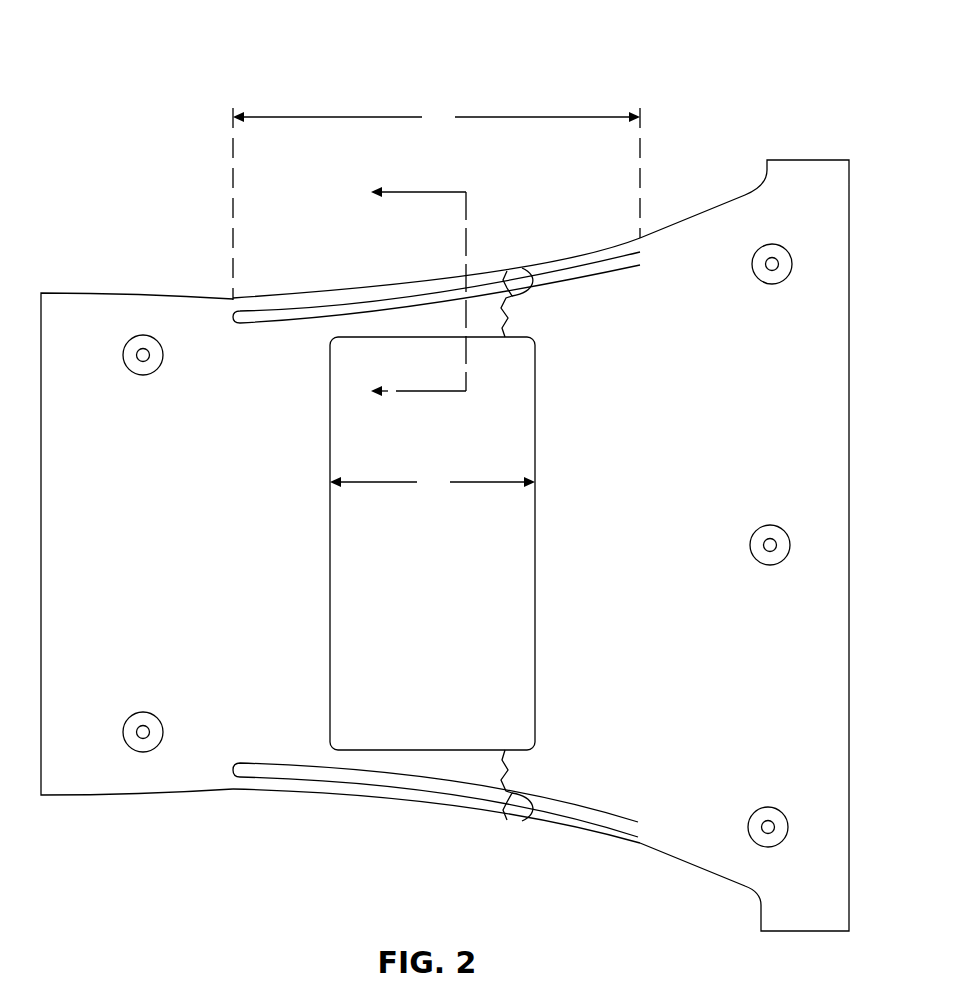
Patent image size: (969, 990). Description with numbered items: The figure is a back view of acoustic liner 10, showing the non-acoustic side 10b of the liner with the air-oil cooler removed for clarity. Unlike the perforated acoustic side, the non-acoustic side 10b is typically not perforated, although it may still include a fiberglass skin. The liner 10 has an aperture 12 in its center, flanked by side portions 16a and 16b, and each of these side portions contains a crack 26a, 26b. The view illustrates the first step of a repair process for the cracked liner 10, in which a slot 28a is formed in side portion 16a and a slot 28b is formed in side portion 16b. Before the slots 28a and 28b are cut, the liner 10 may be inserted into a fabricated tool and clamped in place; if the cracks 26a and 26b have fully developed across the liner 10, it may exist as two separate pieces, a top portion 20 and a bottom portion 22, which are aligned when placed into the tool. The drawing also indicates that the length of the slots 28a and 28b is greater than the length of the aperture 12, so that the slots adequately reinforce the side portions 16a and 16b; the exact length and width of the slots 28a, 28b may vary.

The acoustic liner 10 is at (193, 73).
The non-acoustic side 10b is at (137, 523).
The aperture 12 is at (360, 554).
The side portion 16a is at (433, 810).
The side portion 16b is at (436, 281).
The top portion 20 is at (706, 237).
The bottom portion 22 is at (183, 315).
The crack 26a is at (524, 800).
The crack 26b is at (530, 290).
The slot 28a is at (256, 768).
The slot 28b is at (278, 315).